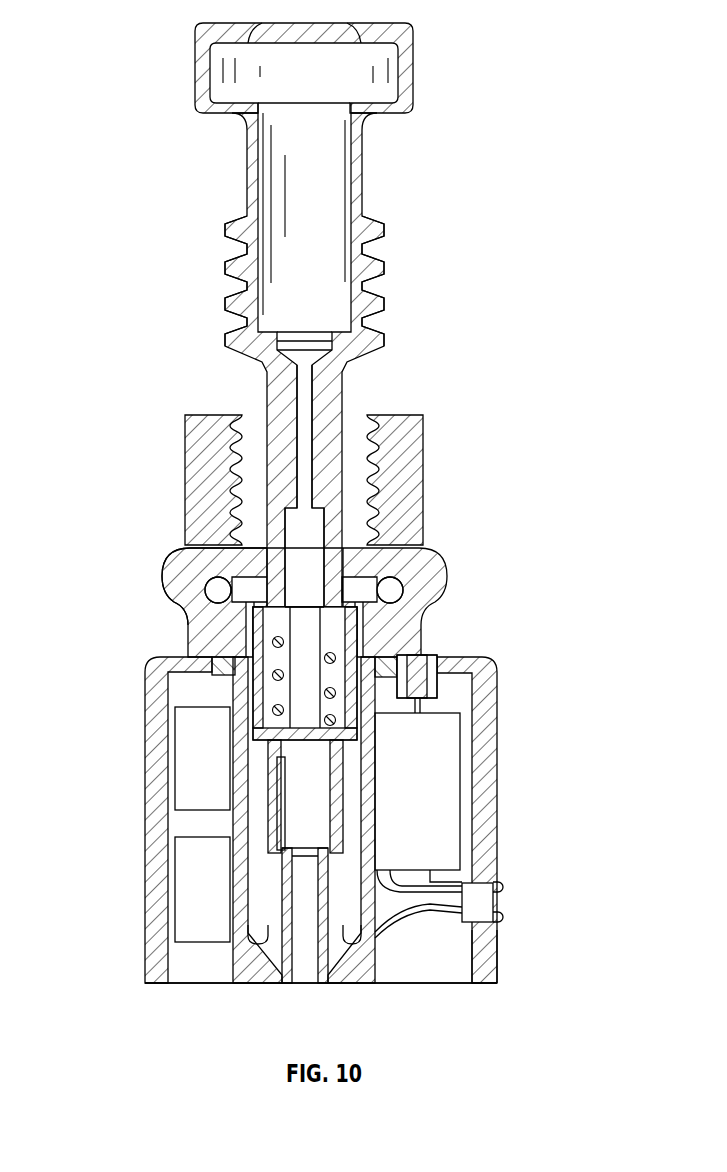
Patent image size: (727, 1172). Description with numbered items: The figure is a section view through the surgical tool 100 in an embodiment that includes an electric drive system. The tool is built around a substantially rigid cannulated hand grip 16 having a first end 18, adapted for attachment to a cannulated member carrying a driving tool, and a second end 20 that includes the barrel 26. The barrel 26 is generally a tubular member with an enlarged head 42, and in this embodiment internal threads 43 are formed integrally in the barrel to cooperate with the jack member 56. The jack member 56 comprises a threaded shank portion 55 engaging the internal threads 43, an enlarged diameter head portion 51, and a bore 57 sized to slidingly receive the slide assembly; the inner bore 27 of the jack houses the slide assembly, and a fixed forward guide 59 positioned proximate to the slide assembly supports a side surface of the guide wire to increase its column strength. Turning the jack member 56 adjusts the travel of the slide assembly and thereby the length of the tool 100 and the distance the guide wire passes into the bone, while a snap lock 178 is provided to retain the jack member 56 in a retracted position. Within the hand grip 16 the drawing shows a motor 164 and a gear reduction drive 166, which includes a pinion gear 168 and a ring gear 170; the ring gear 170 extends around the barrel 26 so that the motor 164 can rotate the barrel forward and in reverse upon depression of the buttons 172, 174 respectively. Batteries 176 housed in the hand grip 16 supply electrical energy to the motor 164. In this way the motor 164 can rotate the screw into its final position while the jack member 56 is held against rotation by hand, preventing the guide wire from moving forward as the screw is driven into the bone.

The surgical tool 100 is at (85, 169).
The enlarged diameter head portion 51 is at (197, 86).
The bore 57 is at (340, 176).
The threaded shank portion 55 is at (227, 244).
The jack member 56 is at (385, 226).
The fixed forward guide 59 is at (318, 385).
The internal threads 43 is at (236, 462).
The barrel 26 is at (425, 460).
The second end 20 is at (432, 550).
The enlarged head 42 is at (180, 568).
The snap lock 178 is at (398, 581).
The inner bore 27 is at (358, 640).
The ring gear 170 is at (222, 658).
The gear reduction drive 166 is at (398, 656).
The pinion gear 168 is at (430, 685).
The batteries 176 is at (182, 775).
The motor 164 is at (450, 773).
The hand grip 16 is at (490, 832).
The first end 18 is at (485, 970).
The button 172 is at (504, 887).
The button 174 is at (504, 917).